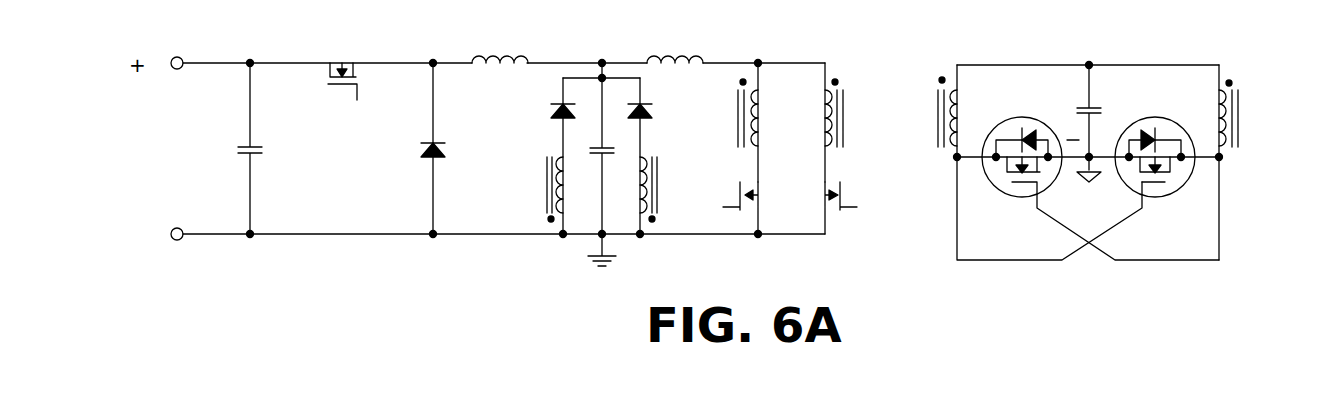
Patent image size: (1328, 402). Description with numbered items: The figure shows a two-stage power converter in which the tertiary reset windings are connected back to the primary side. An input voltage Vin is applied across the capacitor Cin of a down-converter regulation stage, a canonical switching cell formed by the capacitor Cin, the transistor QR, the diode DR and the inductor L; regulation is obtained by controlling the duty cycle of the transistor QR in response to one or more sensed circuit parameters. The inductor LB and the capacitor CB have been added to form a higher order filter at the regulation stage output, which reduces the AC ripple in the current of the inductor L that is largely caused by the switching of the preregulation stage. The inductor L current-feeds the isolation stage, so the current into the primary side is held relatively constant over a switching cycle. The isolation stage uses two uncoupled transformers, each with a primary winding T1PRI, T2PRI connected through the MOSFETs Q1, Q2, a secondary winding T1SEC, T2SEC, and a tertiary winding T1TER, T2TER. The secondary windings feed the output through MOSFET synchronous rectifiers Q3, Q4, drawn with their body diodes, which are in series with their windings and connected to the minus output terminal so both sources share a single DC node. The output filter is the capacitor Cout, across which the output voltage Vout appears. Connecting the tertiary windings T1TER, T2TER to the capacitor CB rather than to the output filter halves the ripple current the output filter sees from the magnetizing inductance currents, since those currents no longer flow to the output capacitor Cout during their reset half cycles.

The input voltage Vin is at (144, 155).
The capacitor Cin is at (274, 148).
The transistor QR is at (333, 91).
The inductor LB is at (500, 41).
The diode DR is at (454, 148).
The inductor L is at (675, 43).
The tertiary winding T1TER is at (520, 156).
The capacitor CB is at (611, 156).
The tertiary winding T2TER is at (681, 156).
The primary winding T1PRI is at (710, 122).
The MOSFET Q1 is at (758, 208).
The primary winding T2PRI is at (864, 122).
The MOSFET Q2 is at (858, 208).
The secondary winding T1SEC is at (1001, 160).
The capacitor Cout is at (1061, 123).
The output voltage Vout is at (1125, 99).
The MOSFET synchronous rectifier Q3 is at (1097, 188).
The MOSFET synchronous rectifier Q4 is at (1159, 172).
The secondary winding T2SEC is at (1267, 162).